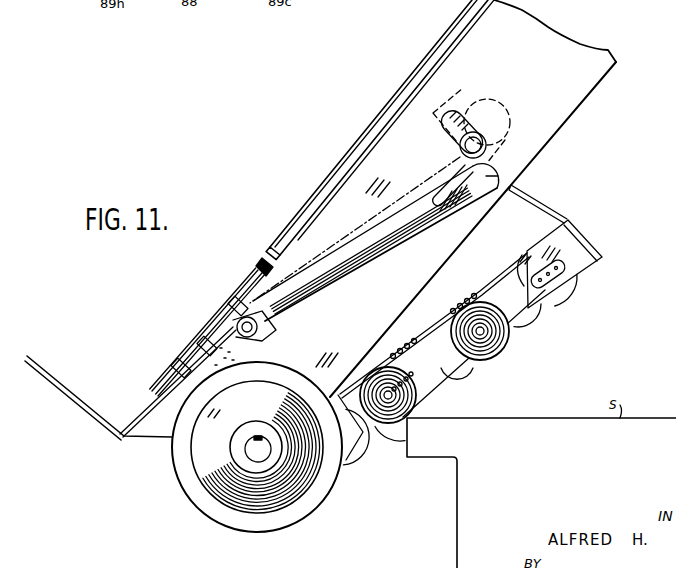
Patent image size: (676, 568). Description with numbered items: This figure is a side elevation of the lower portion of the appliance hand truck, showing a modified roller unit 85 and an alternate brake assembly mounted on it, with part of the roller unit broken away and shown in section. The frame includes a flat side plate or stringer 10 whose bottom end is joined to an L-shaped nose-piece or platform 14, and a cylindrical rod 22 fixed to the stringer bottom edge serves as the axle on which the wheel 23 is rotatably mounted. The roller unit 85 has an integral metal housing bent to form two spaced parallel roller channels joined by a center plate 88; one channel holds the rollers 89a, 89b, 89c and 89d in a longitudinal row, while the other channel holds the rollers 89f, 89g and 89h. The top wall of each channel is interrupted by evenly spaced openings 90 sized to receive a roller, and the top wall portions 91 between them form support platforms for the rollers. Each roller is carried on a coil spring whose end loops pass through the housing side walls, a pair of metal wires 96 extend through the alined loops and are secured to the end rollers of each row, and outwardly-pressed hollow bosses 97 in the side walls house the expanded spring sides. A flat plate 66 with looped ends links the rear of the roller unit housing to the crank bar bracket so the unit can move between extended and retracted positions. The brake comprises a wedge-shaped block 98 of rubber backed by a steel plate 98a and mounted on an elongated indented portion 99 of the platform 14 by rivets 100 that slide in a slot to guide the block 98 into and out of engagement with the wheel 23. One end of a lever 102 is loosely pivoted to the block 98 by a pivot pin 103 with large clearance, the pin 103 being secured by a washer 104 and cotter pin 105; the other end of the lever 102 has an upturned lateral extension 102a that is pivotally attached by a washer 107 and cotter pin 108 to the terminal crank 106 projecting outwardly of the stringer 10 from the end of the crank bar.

The stringer 10 is at (606, 68).
The nose-piece or platform 14 is at (146, 404).
The rod 22 is at (255, 450).
The wheel 23 is at (205, 508).
The flat plate 66 is at (553, 204).
The roller unit 85 is at (573, 232).
The center plate 88 is at (600, 263).
The roller 89a is at (360, 455).
The roller 89b is at (417, 408).
The roller 89c is at (503, 346).
The roller 89d is at (572, 294).
The roller 89f is at (402, 430).
The roller 89g is at (462, 378).
The roller 89h is at (537, 322).
The openings 90 is at (350, 388).
The top wall portions 91 is at (383, 346).
The metal wires 96 is at (524, 283).
The hollow bosses 97 is at (562, 266).
The wedge-shaped block 98 is at (217, 330).
The steel plate 98a is at (203, 334).
The elongated indented portion 99 is at (262, 295).
The rivets 100 is at (230, 300).
The lever 102 is at (385, 255).
The upturned lateral extension 102a is at (501, 160).
The pivot pin 103 is at (242, 337).
The washer 104 is at (260, 335).
The cotter pin 105 is at (273, 329).
The terminal crank 106 is at (453, 102).
The washer 107 is at (478, 138).
The cotter pin 108 is at (463, 166).